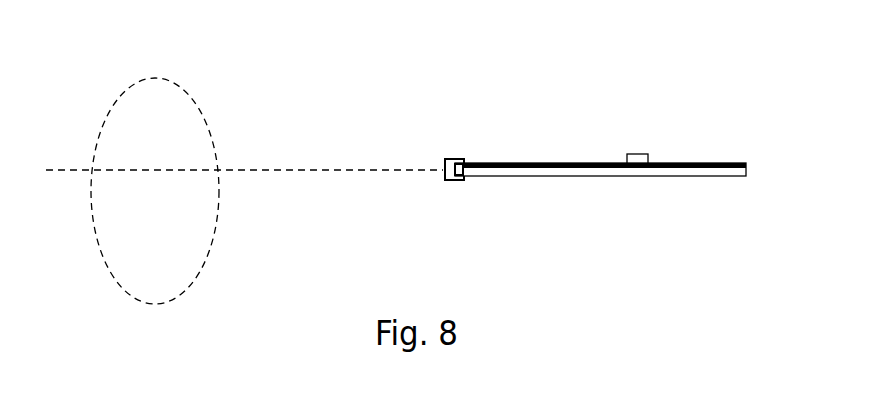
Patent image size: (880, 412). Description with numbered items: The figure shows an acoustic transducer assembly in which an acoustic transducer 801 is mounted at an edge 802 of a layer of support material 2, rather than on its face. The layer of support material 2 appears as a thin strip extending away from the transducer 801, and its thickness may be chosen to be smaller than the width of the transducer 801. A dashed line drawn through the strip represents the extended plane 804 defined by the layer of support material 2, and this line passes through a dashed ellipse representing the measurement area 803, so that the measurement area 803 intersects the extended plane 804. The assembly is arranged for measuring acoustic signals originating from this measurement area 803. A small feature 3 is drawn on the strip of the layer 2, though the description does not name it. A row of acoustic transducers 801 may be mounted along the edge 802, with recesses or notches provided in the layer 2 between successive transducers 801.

The layer of support material 2 is at (573, 178).
The antenna element 3 is at (738, 160).
The acoustic transducer 801 is at (453, 180).
The edge of the layer of support material 802 is at (446, 168).
The measurement area 803 is at (219, 192).
The extended plane 804 is at (305, 170).